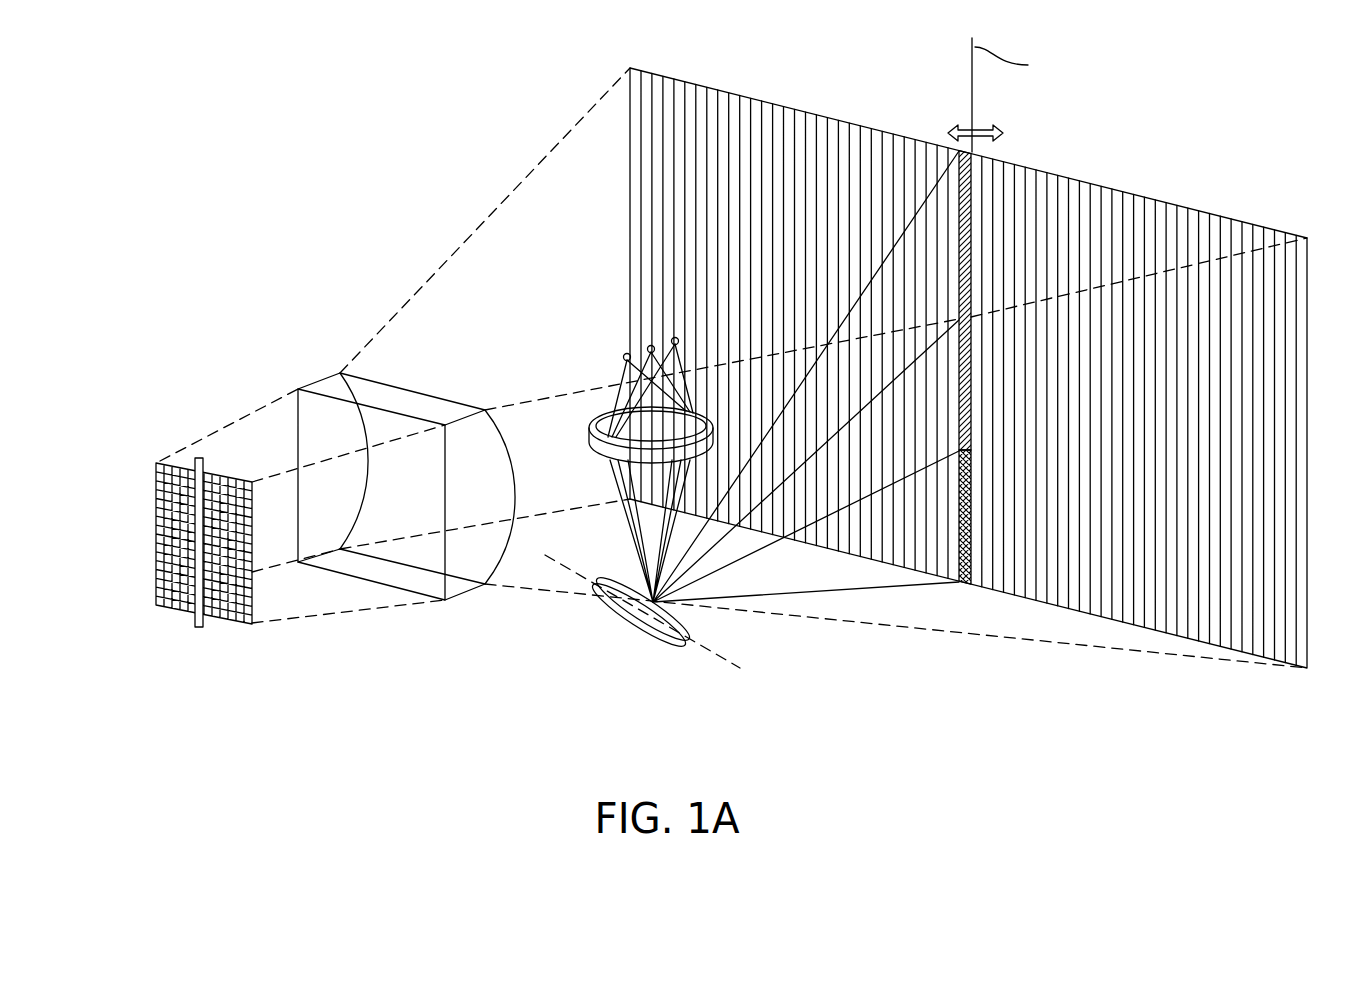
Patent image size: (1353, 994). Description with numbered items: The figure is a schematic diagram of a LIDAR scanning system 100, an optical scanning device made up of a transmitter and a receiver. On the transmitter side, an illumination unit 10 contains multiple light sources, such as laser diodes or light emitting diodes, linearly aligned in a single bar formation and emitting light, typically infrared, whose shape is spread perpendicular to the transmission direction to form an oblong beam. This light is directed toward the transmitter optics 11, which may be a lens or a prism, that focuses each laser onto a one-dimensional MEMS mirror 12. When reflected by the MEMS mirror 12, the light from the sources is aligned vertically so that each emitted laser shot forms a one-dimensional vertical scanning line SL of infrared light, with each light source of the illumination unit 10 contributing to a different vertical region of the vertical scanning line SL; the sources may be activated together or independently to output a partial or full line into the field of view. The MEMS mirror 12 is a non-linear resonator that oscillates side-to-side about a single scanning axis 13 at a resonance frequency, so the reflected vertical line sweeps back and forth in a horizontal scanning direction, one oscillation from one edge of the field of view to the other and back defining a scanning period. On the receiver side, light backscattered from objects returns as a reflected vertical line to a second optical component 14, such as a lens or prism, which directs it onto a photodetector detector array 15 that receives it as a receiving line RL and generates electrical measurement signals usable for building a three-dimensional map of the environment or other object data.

The LIDAR scanning system 100 is at (224, 128).
The illumination unit 10 is at (612, 338).
The transmitter optics 11 is at (589, 432).
The MEMS mirror 12 is at (700, 626).
The scanning axis 13 is at (702, 655).
The second optical component 14 is at (407, 398).
The photodetector detector array 15 is at (168, 458).
The vertical scanning line SL is at (957, 150).
The receiving line RL is at (194, 640).